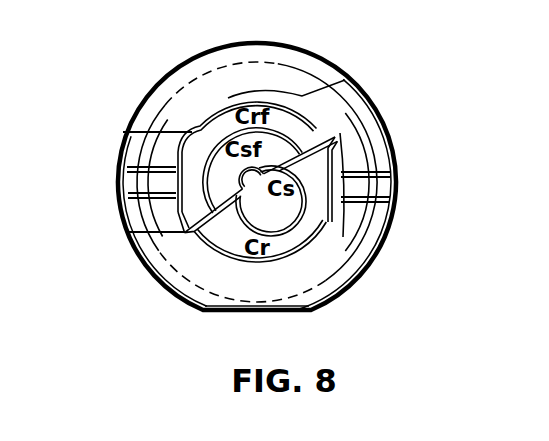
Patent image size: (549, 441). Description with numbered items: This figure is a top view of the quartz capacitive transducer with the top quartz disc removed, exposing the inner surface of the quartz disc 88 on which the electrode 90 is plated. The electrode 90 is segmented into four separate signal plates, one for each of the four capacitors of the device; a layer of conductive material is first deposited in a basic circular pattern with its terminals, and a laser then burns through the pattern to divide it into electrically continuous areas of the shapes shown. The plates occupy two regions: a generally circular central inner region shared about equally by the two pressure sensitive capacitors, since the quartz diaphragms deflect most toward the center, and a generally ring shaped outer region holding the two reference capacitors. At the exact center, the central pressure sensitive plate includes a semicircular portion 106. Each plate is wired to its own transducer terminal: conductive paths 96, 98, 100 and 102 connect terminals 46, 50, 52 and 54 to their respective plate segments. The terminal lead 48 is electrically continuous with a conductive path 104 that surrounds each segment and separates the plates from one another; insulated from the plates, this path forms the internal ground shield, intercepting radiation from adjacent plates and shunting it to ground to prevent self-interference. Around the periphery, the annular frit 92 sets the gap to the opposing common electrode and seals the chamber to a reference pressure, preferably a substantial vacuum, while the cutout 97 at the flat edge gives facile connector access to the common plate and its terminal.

The transducer terminal 46 is at (134, 144).
The terminal lead 48 is at (128, 180).
The transducer terminal 50 is at (136, 206).
The transducer terminal 52 is at (381, 155).
The transducer terminal 54 is at (381, 211).
The quartz disc 88 is at (400, 96).
The electrode 90 is at (271, 84).
The annular frit 92 is at (233, 82).
The conductive path 96 is at (188, 131).
The cutout 97 is at (270, 311).
The conductive path 98 is at (190, 231).
The conductive path 100 is at (340, 124).
The conductive path 102 is at (336, 226).
The conductive path 104 is at (334, 134).
The semicircular portion 106 is at (250, 183).